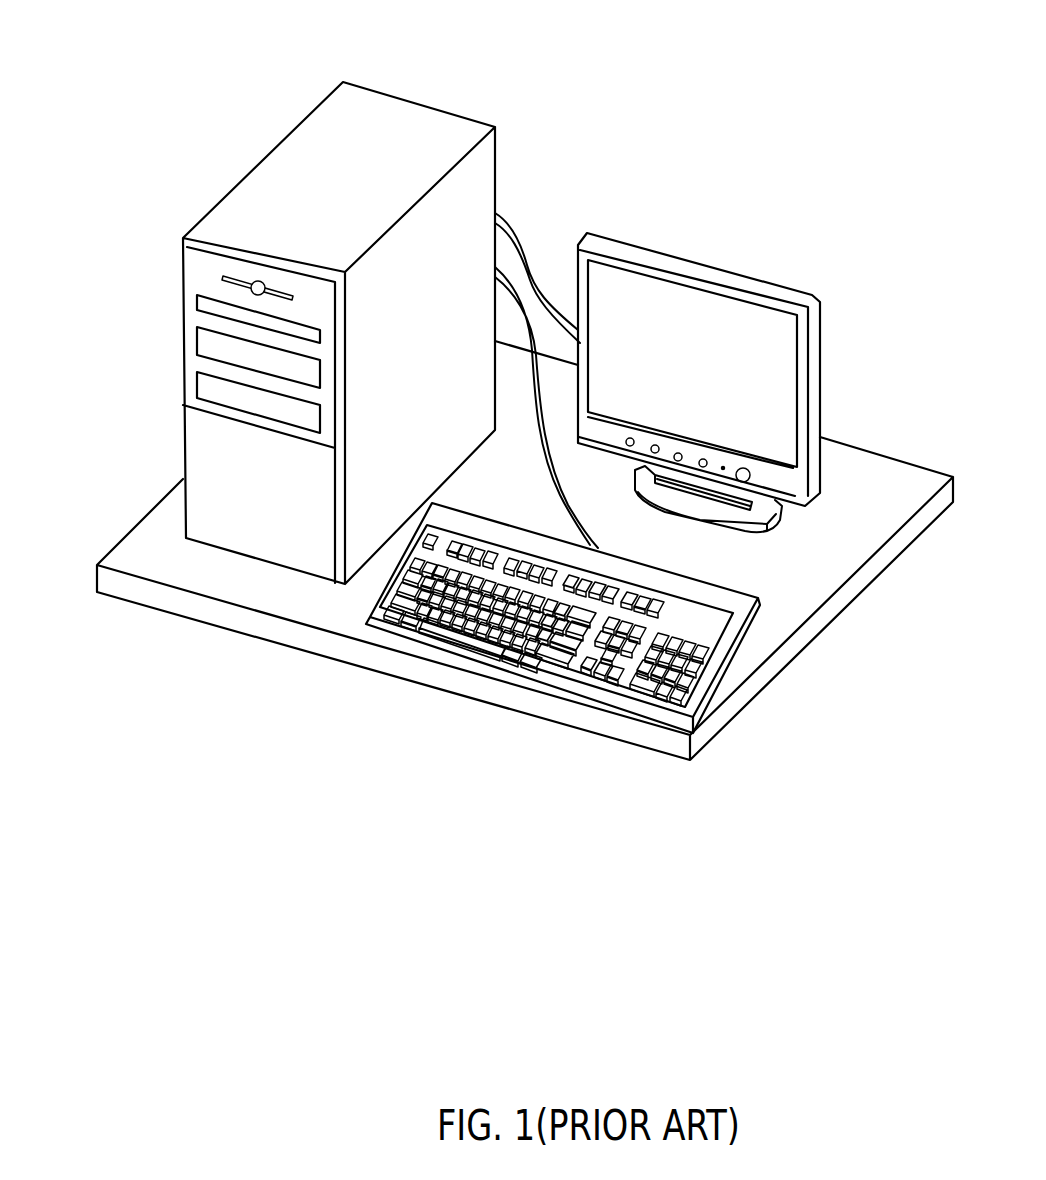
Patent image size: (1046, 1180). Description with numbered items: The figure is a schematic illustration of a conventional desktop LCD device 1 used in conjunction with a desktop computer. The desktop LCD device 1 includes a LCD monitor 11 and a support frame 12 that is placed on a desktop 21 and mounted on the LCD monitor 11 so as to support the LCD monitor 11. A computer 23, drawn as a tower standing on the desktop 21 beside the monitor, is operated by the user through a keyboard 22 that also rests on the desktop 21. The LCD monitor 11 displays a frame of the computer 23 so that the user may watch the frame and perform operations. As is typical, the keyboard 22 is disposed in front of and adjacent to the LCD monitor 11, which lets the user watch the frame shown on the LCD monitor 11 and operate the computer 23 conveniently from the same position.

The desktop LCD device 1 is at (754, 335).
The LCD monitor 11 is at (777, 356).
The support frame 12 is at (778, 520).
The desktop 21 is at (110, 530).
The keyboard 22 is at (755, 615).
The computer 23 is at (308, 157).